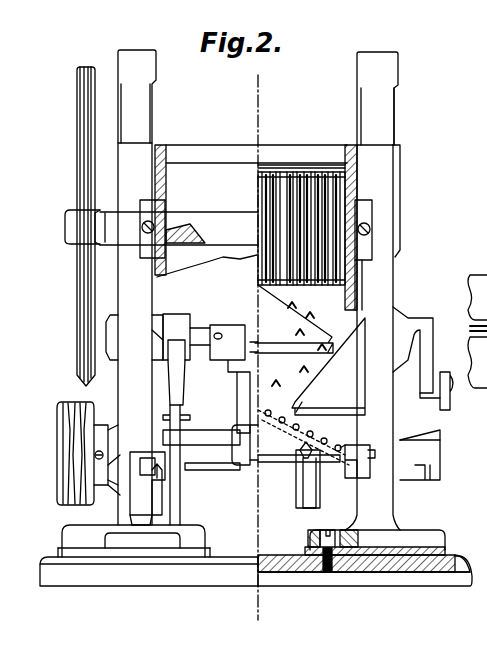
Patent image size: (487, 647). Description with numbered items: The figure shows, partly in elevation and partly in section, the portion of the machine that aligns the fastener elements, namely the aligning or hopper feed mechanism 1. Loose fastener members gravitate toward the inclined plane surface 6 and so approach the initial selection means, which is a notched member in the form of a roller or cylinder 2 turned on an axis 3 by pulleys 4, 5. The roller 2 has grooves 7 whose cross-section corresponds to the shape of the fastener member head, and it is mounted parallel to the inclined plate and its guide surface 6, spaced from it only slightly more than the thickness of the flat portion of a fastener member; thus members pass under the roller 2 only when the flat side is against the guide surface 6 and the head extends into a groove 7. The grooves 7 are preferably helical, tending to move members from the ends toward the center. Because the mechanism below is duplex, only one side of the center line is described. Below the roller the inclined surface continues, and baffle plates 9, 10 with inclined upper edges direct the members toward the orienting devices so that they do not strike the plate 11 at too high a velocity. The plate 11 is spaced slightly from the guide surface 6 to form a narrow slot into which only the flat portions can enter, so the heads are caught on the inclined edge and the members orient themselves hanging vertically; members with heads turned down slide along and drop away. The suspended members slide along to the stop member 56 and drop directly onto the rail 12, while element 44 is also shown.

The aligning or hopper feed mechanism 1 is at (135, 570).
The roller or cylinder 2 is at (283, 178).
The axis 3 is at (205, 218).
The pulley 4 is at (80, 104).
The pulley 5 is at (66, 418).
The inclined plane surface 6 is at (345, 325).
The grooves 7 is at (316, 178).
The baffle plate 9 is at (268, 314).
The baffle plate 10 is at (352, 385).
The plate 11 is at (283, 445).
The rail 12 is at (162, 485).
The guide 44 is at (480, 276).
The stop member 56 is at (368, 460).